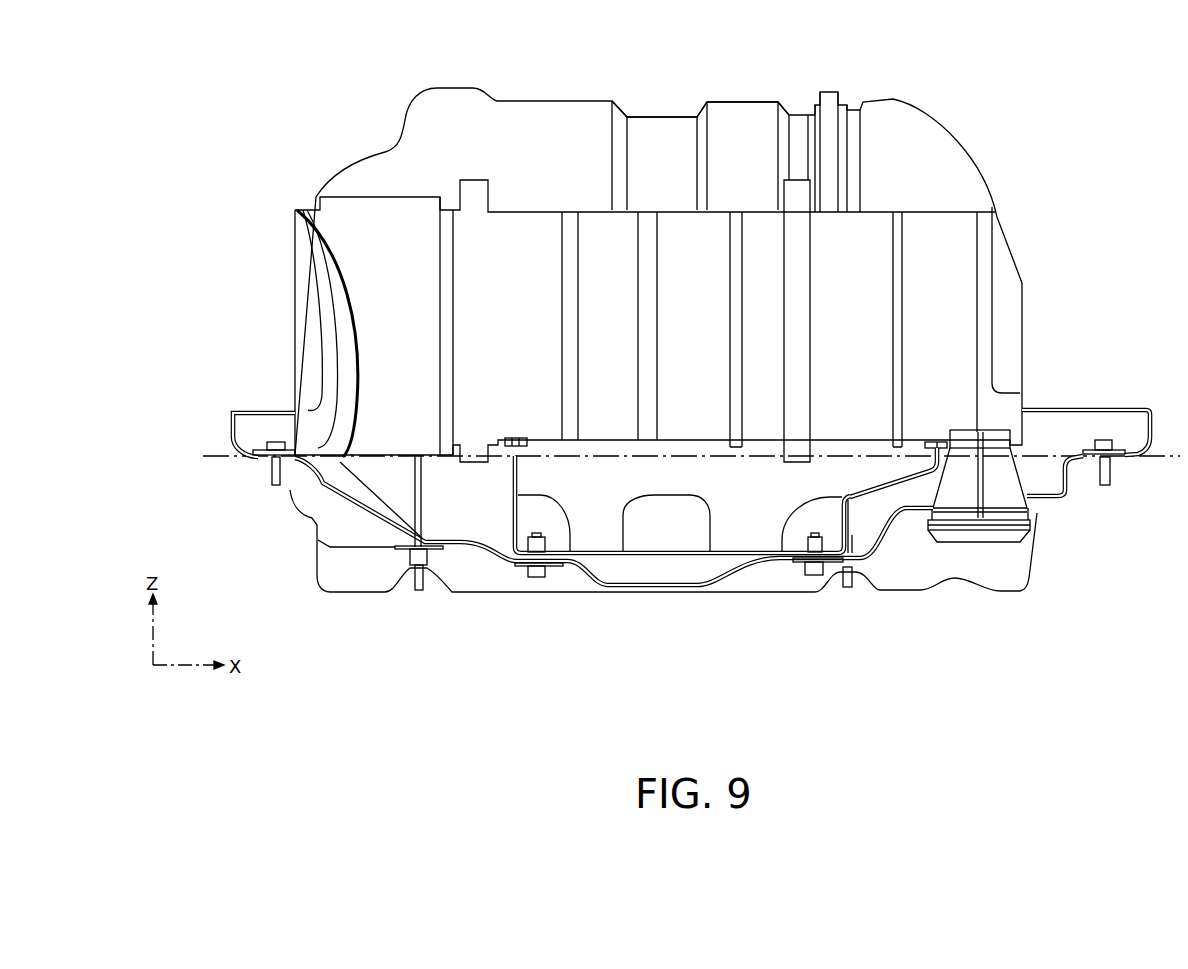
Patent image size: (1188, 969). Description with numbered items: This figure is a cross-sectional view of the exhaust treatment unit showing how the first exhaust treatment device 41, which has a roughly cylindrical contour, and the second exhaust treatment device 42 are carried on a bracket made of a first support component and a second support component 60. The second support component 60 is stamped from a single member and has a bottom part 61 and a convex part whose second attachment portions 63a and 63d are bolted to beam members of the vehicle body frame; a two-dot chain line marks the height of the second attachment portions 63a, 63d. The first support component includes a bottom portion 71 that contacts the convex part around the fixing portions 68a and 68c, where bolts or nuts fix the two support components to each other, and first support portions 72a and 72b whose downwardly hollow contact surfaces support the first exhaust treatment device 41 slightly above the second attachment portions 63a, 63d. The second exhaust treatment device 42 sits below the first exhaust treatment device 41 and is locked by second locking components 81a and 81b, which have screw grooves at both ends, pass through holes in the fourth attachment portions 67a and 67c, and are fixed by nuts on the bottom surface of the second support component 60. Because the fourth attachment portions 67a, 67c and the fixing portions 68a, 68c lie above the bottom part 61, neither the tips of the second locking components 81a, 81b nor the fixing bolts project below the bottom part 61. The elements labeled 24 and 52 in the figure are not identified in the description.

The vehicle body lower frame 24 is at (1131, 619).
The first exhaust treatment device 41 is at (948, 252).
The second exhaust treatment device 42 is at (500, 493).
The upper housing portion 52 is at (743, 118).
The second support component 60 is at (1155, 421).
The bottom part 61 is at (589, 597).
The second attachment portion 63a is at (1100, 466).
The second attachment portion 63d is at (268, 465).
The fourth attachment portion 67a is at (858, 537).
The fourth attachment portion 67c is at (407, 552).
The fixing portion 68a is at (828, 573).
The fixing portion 68c is at (548, 572).
The bottom portion 71 is at (683, 553).
The first support portion 72a is at (937, 468).
The first support portion 72b is at (515, 448).
The second locking component 81a is at (852, 585).
The second locking component 81b is at (427, 578).